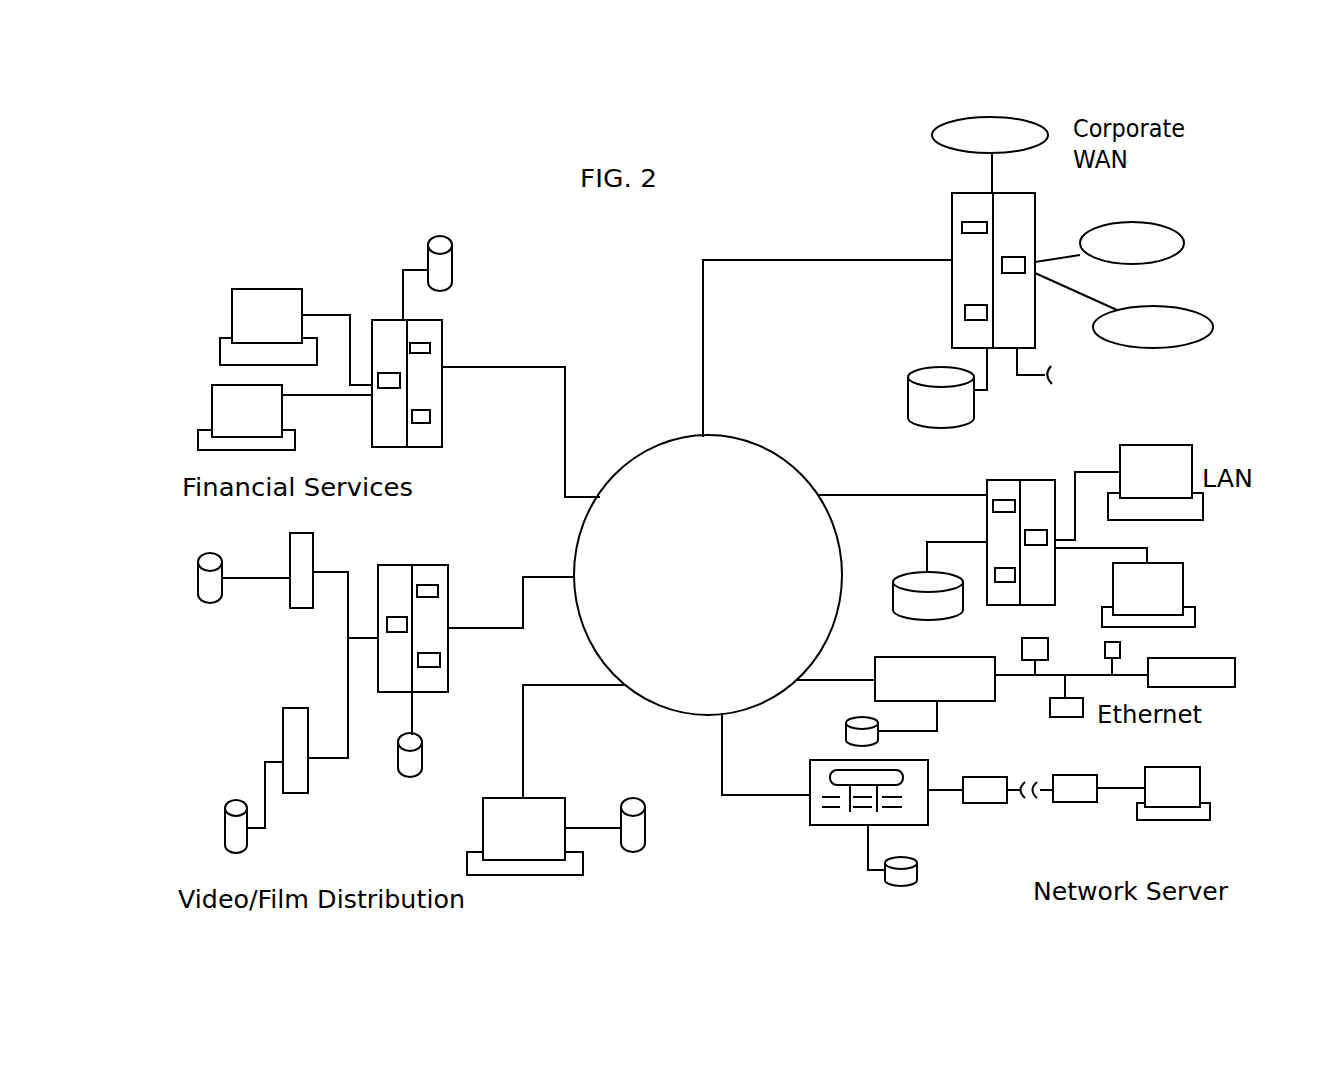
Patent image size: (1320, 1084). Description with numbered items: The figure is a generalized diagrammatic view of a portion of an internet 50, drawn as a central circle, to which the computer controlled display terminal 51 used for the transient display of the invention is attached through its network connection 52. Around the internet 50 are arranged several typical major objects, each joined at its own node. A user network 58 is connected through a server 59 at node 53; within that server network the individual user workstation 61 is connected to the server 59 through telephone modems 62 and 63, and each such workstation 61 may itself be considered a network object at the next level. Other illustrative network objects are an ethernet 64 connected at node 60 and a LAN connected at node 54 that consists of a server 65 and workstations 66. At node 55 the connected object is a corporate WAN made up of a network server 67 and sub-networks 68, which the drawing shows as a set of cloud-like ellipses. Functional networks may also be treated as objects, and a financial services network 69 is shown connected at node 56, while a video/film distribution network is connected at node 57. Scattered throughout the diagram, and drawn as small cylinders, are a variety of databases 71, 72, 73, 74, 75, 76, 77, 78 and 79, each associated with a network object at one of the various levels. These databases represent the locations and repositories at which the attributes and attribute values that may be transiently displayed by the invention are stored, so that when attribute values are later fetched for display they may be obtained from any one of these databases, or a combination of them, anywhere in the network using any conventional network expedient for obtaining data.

The internet 50 is at (660, 483).
The computer controlled display terminal 51 is at (535, 877).
The network connection 52 is at (523, 765).
The node 53 is at (722, 713).
The node 54 is at (807, 496).
The node 55 is at (703, 437).
The node 56 is at (600, 497).
The node 57 is at (575, 575).
The user network 58 is at (985, 805).
The server 59 is at (810, 825).
The node 60 is at (800, 680).
The user workstation 61 is at (1178, 767).
The telephone modem 62 is at (1068, 800).
The telephone modem 63 is at (985, 790).
The ethernet 64 is at (918, 677).
The server 65 is at (1000, 488).
The workstations 66 is at (1165, 443).
The network server 67 is at (952, 207).
The sub-networks 68 is at (970, 137).
The financial services network 69 is at (352, 293).
The database 71 is at (648, 825).
The database 72 is at (847, 728).
The database 73 is at (912, 605).
The database 74 is at (953, 415).
The database 75 is at (917, 875).
The database 76 is at (452, 257).
The database 77 is at (408, 773).
The database 78 is at (232, 845).
The database 79 is at (210, 593).